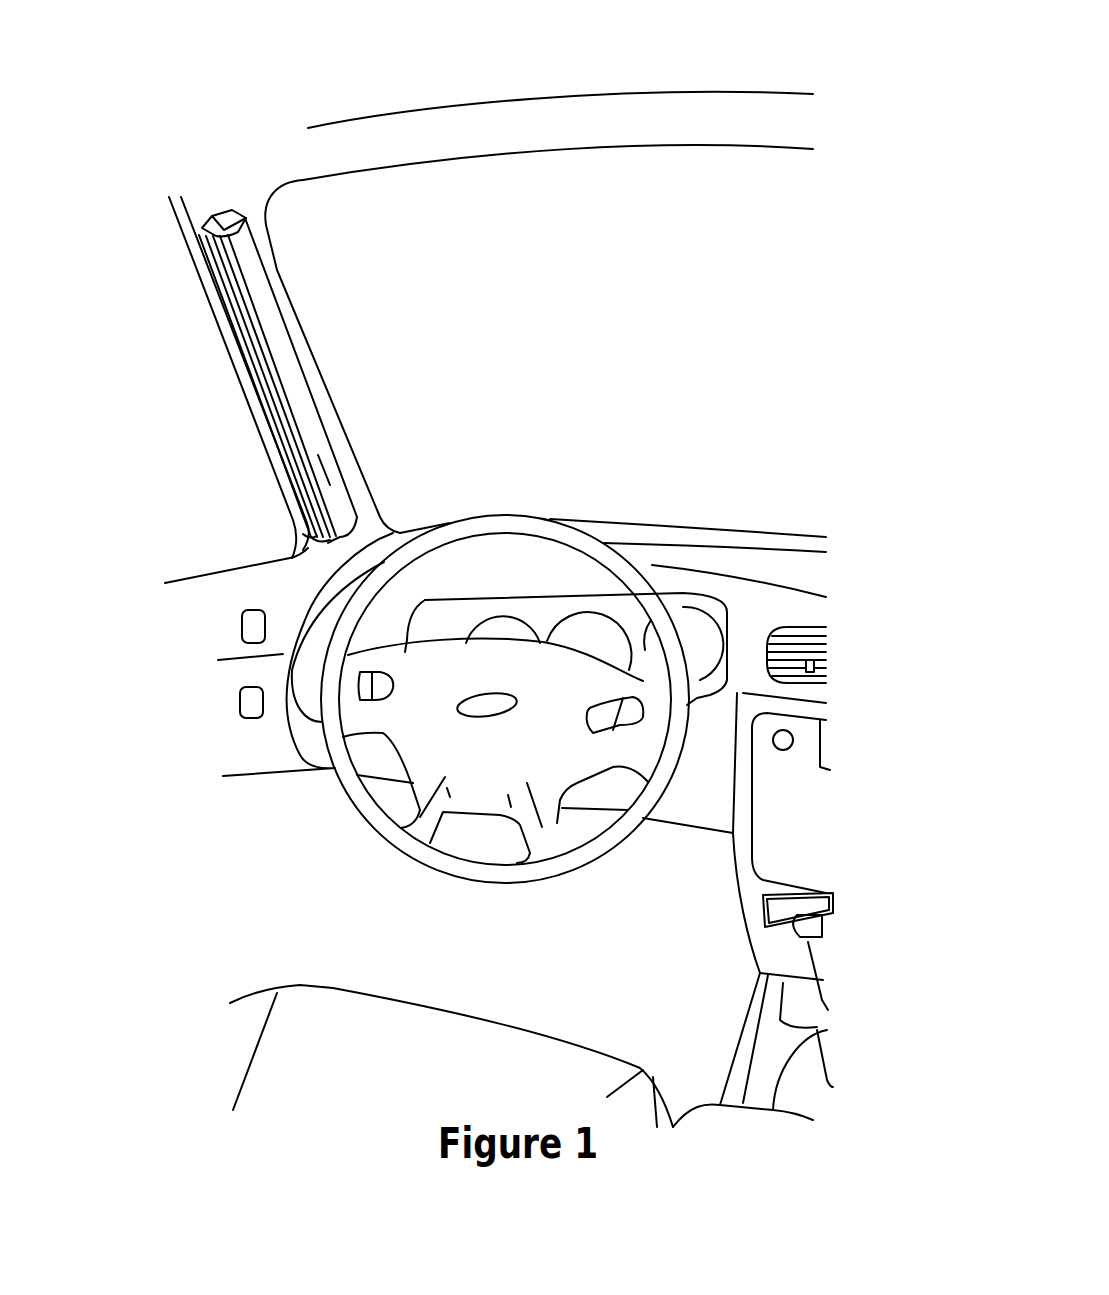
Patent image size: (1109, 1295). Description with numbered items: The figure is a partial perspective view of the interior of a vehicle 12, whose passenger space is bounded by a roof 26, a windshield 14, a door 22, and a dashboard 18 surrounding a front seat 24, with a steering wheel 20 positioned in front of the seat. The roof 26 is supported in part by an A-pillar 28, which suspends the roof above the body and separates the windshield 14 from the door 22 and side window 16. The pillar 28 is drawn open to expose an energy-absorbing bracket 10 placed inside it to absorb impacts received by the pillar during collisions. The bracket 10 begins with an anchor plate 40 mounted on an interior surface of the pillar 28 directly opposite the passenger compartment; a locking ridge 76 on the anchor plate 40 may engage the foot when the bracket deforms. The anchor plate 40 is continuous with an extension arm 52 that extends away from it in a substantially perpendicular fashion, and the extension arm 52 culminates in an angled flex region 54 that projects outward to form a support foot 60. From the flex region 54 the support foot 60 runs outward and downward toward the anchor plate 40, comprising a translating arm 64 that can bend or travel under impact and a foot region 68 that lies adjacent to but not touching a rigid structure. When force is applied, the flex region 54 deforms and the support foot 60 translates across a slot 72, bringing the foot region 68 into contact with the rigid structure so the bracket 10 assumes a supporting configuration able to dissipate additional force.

The energy-absorbing bracket 10 is at (215, 421).
The vehicle 12 is at (492, 60).
The windshield 14 is at (600, 322).
The side window 16 is at (211, 569).
The dashboard 18 is at (643, 540).
The steering wheel 20 is at (494, 751).
The door 22 is at (232, 738).
The front seat 24 is at (379, 1056).
The roof 26 is at (528, 108).
The A-pillar 28 is at (165, 247).
The anchor plate 40 is at (222, 230).
The extension arm 52 is at (237, 212).
The flex region 54 is at (294, 372).
The support foot 60 is at (320, 246).
The translating arm 64 is at (320, 458).
The foot region 68 is at (203, 318).
The slot 72 is at (303, 534).
The locking ridge 76 is at (252, 375).